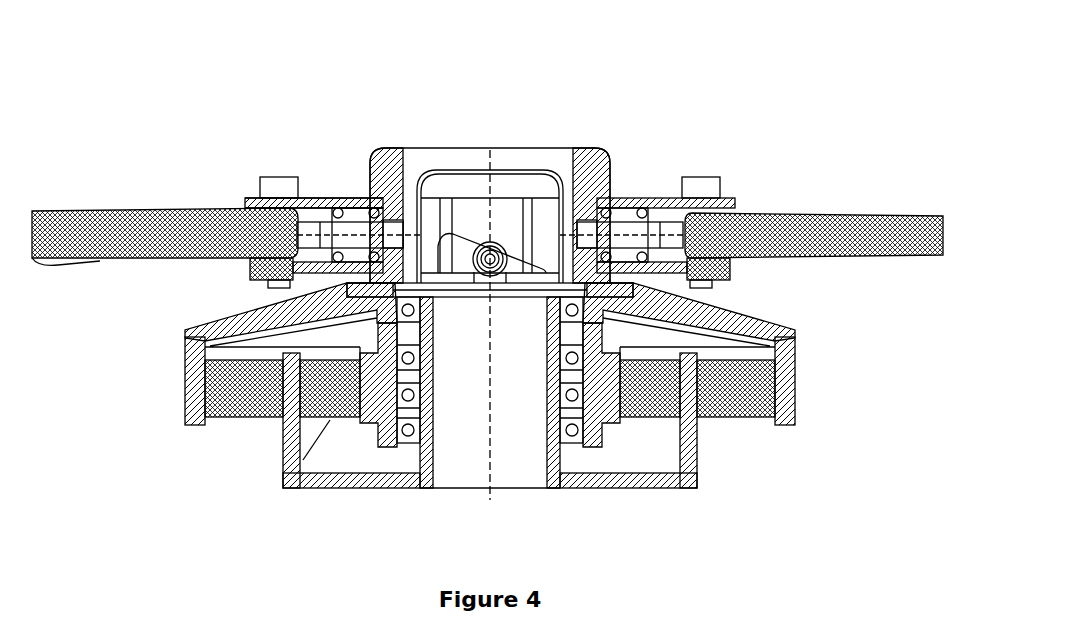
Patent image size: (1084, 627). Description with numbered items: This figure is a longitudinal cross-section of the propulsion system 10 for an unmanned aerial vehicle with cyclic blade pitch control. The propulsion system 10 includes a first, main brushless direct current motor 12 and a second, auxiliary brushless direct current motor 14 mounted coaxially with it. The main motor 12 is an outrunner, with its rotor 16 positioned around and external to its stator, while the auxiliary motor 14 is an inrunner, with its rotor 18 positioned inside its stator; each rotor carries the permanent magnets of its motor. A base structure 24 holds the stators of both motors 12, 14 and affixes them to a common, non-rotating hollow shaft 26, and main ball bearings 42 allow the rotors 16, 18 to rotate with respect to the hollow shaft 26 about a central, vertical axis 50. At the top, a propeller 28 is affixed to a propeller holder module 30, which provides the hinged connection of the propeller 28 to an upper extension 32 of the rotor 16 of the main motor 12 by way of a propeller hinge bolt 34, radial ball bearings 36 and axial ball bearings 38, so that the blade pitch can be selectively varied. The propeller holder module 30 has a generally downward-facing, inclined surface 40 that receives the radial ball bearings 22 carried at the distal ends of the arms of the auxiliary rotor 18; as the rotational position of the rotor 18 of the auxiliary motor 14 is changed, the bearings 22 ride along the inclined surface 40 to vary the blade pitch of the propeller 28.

The propulsion system 10 is at (679, 40).
The first, main brushless direct current motor 12 is at (223, 418).
The second, auxiliary brushless direct current motor 14 is at (282, 485).
The rotor 16 is at (185, 420).
The rotor 18 is at (380, 445).
The radial ball bearings 22 is at (447, 215).
The base structure 24 is at (333, 487).
The hollow shaft 26 is at (517, 468).
The propeller 28 is at (215, 207).
The propeller holder module 30 is at (258, 198).
The upper extension 32 is at (400, 178).
The propeller hinge bolt 34 is at (318, 200).
The radial ball bearings 36 is at (343, 205).
The axial ball bearings 38 is at (378, 162).
The inclined surface 40 is at (492, 250).
The main ball bearings 42 is at (405, 435).
The central, vertical axis 50 is at (488, 448).